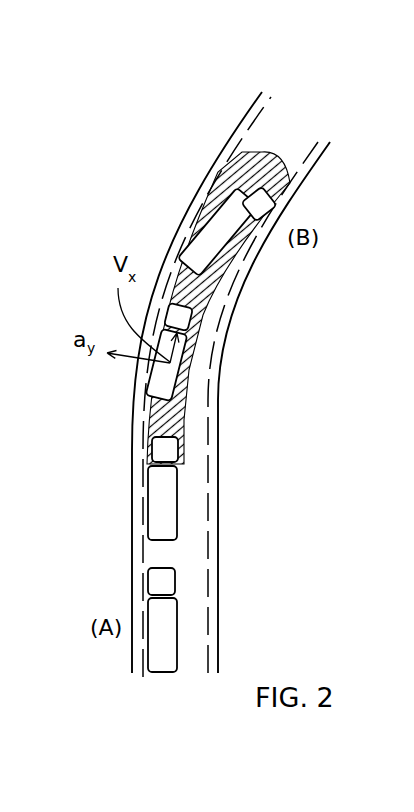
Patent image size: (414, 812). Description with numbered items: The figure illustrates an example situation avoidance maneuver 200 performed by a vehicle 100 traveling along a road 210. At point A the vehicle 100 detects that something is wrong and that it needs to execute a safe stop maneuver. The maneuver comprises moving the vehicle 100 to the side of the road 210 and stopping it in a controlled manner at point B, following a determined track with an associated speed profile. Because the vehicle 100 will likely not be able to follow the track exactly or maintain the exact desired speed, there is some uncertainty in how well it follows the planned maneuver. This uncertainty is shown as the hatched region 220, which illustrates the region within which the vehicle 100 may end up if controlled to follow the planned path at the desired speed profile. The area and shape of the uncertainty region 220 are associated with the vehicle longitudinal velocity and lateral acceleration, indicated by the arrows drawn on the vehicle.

The vehicle 100 is at (167, 623).
The situation avoidance maneuver 200 is at (92, 75).
The road 210 is at (233, 314).
The uncertainty region 220 is at (233, 168).